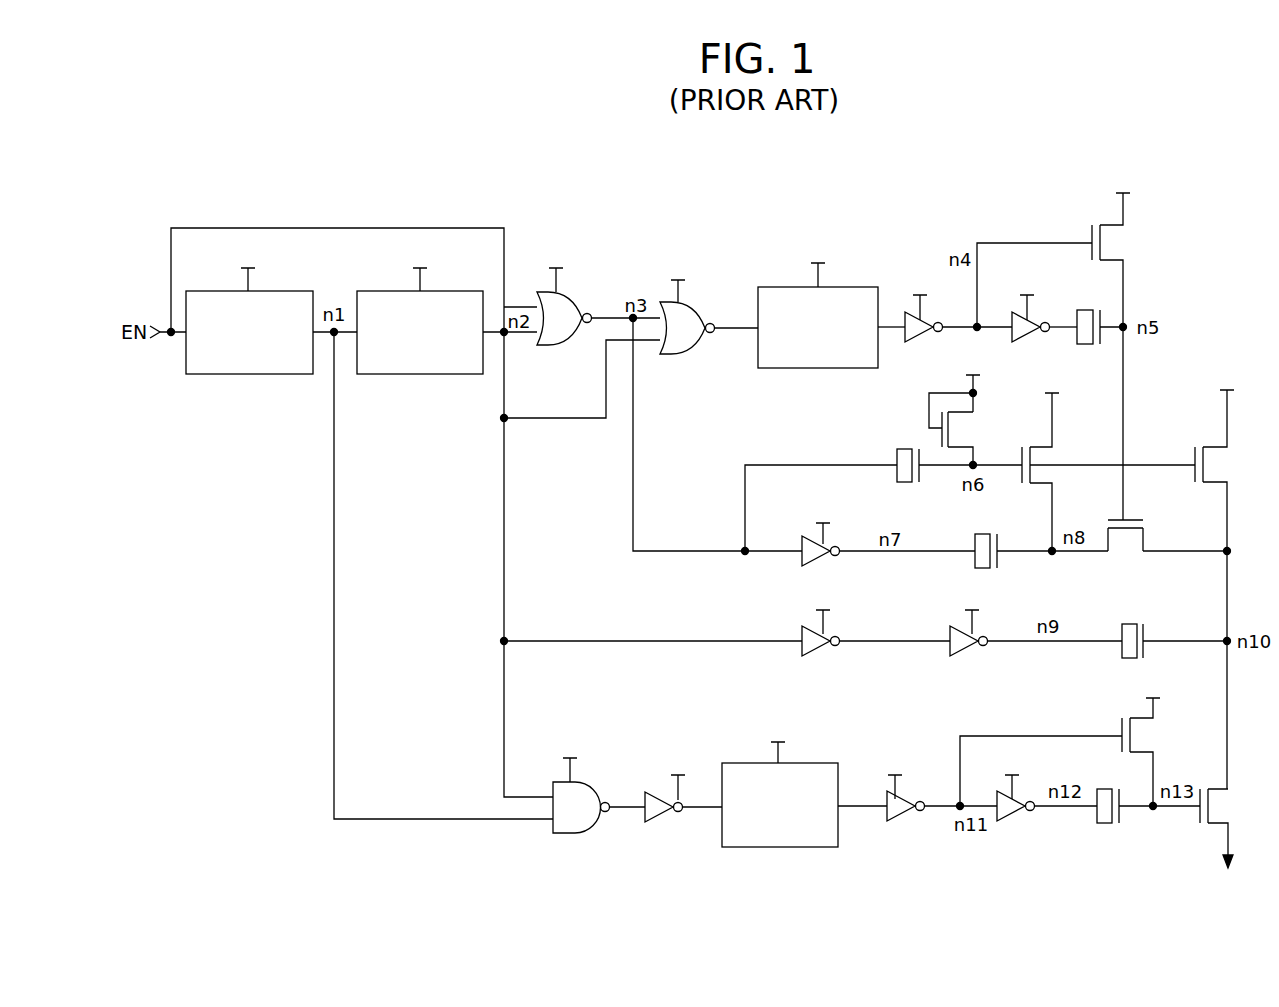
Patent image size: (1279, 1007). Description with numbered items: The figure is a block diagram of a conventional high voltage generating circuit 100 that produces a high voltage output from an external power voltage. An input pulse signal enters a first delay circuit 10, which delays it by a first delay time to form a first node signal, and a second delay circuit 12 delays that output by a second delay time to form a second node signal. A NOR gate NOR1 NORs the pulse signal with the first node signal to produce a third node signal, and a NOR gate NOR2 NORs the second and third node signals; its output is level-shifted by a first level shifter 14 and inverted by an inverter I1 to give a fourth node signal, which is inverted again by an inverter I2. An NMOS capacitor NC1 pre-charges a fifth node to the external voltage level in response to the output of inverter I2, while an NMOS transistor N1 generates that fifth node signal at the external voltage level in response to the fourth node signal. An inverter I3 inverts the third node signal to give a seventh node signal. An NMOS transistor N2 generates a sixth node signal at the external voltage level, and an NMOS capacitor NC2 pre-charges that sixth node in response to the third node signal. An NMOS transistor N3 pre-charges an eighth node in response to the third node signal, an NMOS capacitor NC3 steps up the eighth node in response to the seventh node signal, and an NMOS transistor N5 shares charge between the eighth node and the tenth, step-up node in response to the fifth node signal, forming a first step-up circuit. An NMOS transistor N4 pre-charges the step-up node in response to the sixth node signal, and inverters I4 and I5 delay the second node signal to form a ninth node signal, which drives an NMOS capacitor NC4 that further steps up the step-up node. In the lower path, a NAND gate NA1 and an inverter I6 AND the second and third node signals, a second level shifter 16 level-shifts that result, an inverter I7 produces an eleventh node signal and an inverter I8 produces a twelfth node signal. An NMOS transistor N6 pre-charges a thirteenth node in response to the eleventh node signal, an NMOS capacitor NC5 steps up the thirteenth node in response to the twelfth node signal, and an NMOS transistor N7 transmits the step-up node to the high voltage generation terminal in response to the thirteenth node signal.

The high voltage generating circuit 100 is at (983, 183).
The first delay circuit 10 is at (250, 374).
The second delay circuit 12 is at (424, 374).
The first level shifter 14 is at (818, 368).
The second level shifter 16 is at (788, 847).
The NOR gate NOR1 is at (552, 346).
The NOR gate NOR2 is at (700, 356).
The NAND gate NA1 is at (590, 834).
The inverter I1 is at (935, 317).
The inverter I2 is at (1042, 317).
The inverter I3 is at (833, 541).
The inverter I4 is at (833, 650).
The inverter I5 is at (981, 650).
The inverter I6 is at (665, 818).
The inverter I7 is at (906, 815).
The inverter I8 is at (1010, 815).
The NMOS transistor N1 is at (1122, 344).
The NMOS transistor N2 is at (963, 406).
The NMOS transistor N3 is at (1108, 459).
The NMOS transistor N4 is at (1221, 577).
The NMOS transistor N5 is at (1125, 538).
The NMOS transistor N6 is at (1149, 739).
The NMOS transistor N7 is at (1229, 844).
The NMOS capacitor NC1 is at (1088, 306).
The NMOS capacitor NC2 is at (893, 455).
The NMOS capacitor NC3 is at (972, 538).
The NMOS capacitor NC4 is at (1118, 628).
The NMOS capacitor NC5 is at (1115, 826).